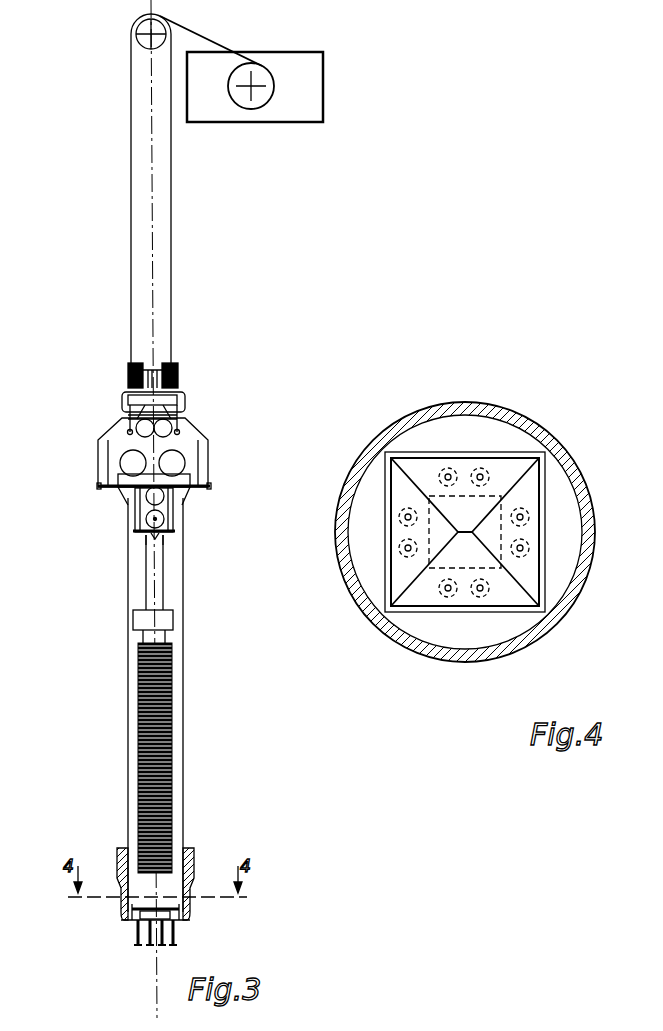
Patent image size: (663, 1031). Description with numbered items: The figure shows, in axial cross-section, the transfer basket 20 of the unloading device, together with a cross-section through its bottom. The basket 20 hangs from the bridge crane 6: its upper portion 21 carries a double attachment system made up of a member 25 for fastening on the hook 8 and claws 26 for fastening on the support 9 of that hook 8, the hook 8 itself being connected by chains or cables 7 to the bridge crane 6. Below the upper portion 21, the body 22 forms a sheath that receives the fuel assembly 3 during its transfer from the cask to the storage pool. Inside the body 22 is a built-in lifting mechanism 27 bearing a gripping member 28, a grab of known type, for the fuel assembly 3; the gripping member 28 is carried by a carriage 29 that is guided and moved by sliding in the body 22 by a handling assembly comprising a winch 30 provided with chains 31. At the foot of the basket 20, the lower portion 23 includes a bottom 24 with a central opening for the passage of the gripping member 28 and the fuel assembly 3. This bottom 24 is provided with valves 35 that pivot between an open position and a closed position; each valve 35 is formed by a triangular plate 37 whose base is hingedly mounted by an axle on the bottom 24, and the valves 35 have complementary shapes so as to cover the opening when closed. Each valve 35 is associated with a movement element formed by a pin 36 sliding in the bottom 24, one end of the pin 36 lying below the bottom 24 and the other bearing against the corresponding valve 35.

In FIG. 3, the fuel assembly 3 is at (170, 733).
In FIG. 3, the bridge crane 6 is at (268, 52).
In FIG. 3, the chains or cables 7 is at (172, 192).
In FIG. 3, the hook 8 is at (128, 372).
In FIG. 3, the support of the hook 9 is at (172, 363).
In FIG. 3, the basket 20 is at (161, 722).
In FIG. 4, the basket 20 is at (577, 446).
In FIG. 3, the upper portion 21 is at (208, 455).
In FIG. 3, the body 22 is at (128, 680).
In FIG. 3, the lower portion 23 is at (125, 885).
In FIG. 3, the bottom 24 is at (178, 915).
In FIG. 3, the member for fastening on the hook 25 is at (122, 418).
In FIG. 3, the claws 26 is at (122, 400).
In FIG. 3, the built-in lifting mechanism 27 is at (138, 543).
In FIG. 3, the gripping member 28 is at (143, 636).
In FIG. 3, the carriage 29 is at (173, 617).
In FIG. 3, the winch 30 is at (135, 500).
In FIG. 3, the chains 31 is at (163, 578).
In FIG. 3, the valves 35 is at (165, 905).
In FIG. 4, the valves 35 is at (464, 468).
In FIG. 3, the pin 36 is at (137, 934).
In FIG. 4, the pin 36 is at (440, 469).
In FIG. 4, the triangular plate 37 is at (503, 473).